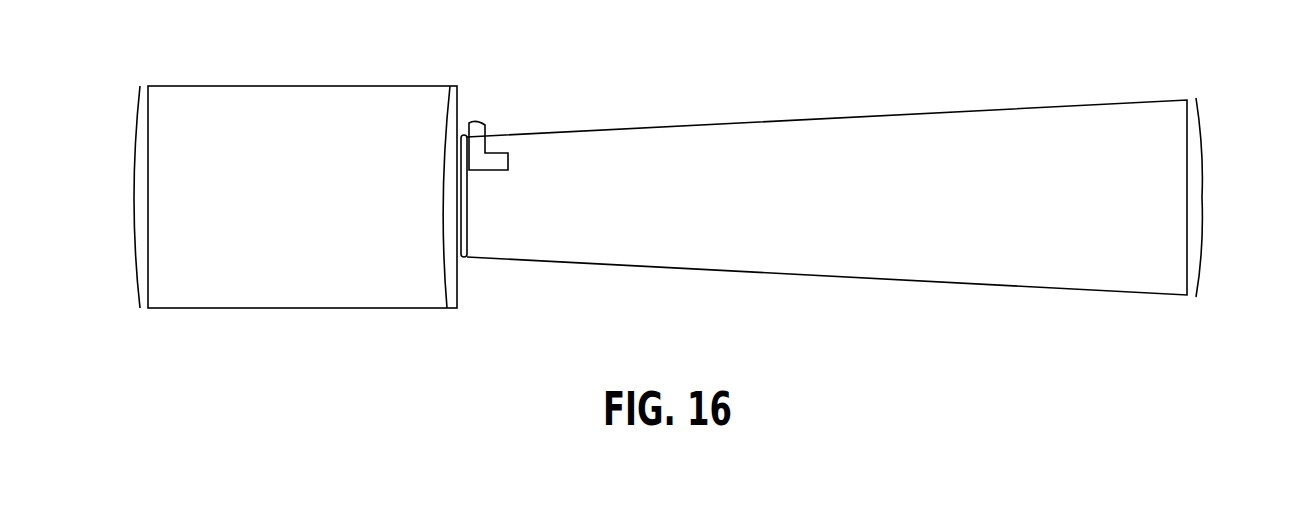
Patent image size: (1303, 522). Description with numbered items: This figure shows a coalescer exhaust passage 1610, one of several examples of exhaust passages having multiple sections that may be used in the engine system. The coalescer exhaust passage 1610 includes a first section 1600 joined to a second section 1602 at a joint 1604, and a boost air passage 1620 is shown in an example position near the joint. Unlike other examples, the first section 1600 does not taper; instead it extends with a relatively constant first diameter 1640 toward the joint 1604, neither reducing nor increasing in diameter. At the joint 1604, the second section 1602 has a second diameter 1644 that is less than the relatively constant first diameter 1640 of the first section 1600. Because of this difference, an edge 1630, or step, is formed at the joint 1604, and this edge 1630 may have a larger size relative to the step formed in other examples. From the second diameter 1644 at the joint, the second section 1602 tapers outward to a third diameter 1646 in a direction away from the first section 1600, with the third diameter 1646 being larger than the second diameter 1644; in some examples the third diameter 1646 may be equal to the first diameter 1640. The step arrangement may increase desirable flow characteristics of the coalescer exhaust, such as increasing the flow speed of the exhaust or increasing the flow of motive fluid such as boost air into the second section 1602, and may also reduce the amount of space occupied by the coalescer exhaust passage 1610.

The first section 1600 is at (323, 208).
The second section 1602 is at (843, 208).
The joint 1604 is at (463, 235).
The coalescer exhaust passage 1610 is at (700, 52).
The boost air passage 1620 is at (485, 150).
The edge 1630 is at (458, 297).
The first diameter 1640 is at (133, 200).
The second diameter 1644 is at (470, 192).
The third diameter 1646 is at (1207, 197).